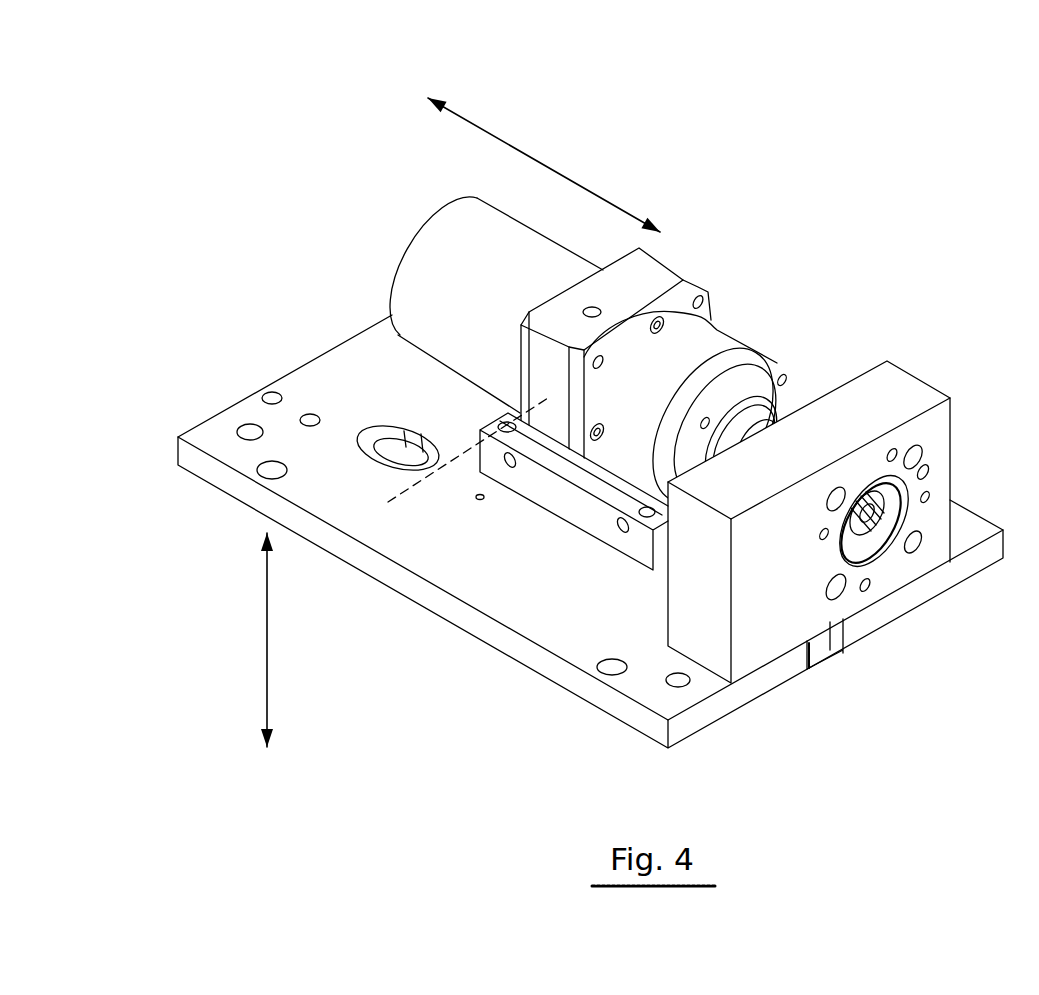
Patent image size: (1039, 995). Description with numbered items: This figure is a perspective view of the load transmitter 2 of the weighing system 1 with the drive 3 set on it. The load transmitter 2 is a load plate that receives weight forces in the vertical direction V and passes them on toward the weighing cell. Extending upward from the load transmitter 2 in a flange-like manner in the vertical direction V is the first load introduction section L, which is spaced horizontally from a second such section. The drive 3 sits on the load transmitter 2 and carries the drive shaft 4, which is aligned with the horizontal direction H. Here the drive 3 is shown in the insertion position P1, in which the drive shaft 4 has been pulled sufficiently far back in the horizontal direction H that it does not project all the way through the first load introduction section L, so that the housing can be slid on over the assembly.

The weighing system 1 is at (590, 388).
The load transmitter 2 is at (338, 380).
The drive 3 is at (740, 273).
The drive shaft 4 is at (878, 548).
The first load introduction section L is at (900, 402).
The horizontal direction H is at (544, 165).
The vertical direction V is at (249, 640).
The insertion position P1 is at (407, 493).